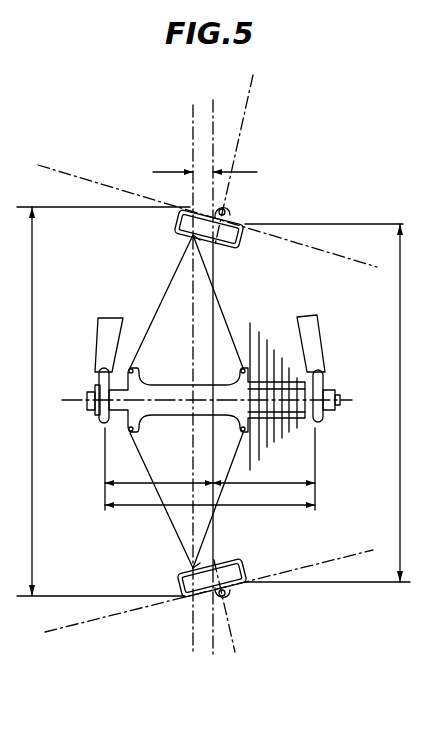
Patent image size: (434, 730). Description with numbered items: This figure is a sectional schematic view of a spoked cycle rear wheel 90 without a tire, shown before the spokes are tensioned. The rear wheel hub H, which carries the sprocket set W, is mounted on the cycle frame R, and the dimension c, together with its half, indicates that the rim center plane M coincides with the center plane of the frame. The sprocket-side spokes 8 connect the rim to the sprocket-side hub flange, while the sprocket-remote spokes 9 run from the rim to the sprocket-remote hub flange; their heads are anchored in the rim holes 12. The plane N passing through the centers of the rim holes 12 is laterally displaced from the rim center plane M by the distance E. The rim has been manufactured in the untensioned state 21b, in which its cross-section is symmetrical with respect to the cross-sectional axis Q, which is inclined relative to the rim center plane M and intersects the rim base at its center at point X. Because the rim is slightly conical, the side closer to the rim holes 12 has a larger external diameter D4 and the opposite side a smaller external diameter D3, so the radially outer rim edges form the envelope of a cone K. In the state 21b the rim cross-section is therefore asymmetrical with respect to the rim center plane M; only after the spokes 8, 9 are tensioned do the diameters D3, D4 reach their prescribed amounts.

The spoked cycle rear wheel 90 is at (104, 167).
The untensioned rim cross-section state 21b is at (178, 222).
The rim holes 12 is at (190, 236).
The sprocket-remote spokes 9 is at (159, 300).
The sprocket-side spokes 8 is at (213, 297).
The rear wheel hub H is at (163, 390).
The sprocket set W is at (265, 322).
The cycle frame R is at (100, 343).
The rim base center point X is at (229, 246).
The cone K is at (356, 250).
The cross-sectional axis Q is at (241, 125).
The plane through the rim hole centers N is at (193, 114).
The rim center plane M is at (213, 112).
The displacement distance E is at (205, 164).
The smaller external diameter D3 is at (329, 403).
The larger external diameter D4 is at (103, 401).
The frame spacing c is at (210, 469).